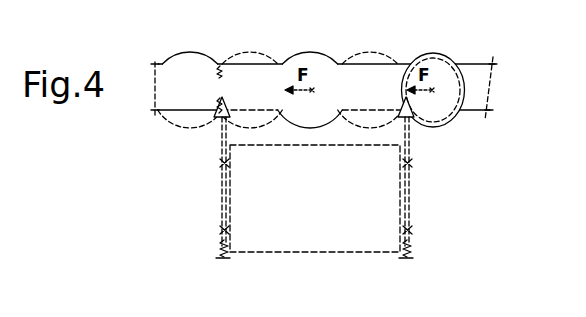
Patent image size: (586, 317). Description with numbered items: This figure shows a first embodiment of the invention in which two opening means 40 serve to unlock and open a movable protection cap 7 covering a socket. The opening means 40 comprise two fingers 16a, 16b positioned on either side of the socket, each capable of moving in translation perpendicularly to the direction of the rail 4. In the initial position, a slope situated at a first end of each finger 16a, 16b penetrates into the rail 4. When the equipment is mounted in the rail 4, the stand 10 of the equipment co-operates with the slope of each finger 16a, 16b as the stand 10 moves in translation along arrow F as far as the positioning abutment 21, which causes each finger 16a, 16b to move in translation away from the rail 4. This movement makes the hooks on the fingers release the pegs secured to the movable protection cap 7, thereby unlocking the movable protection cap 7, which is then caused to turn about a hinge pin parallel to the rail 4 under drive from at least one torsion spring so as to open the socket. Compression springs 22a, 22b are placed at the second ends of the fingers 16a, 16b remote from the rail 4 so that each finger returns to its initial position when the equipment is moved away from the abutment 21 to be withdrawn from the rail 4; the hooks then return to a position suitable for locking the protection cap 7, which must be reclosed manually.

The stand 10 is at (373, 52).
The rail 4 is at (482, 81).
The opening means 40 is at (208, 172).
The finger 16a is at (221, 210).
The finger 16b is at (411, 183).
The compression spring 22a is at (223, 256).
The compression spring 22b is at (409, 254).
The movable protection cap 7 is at (373, 241).
The positioning abutment 21 is at (217, 71).